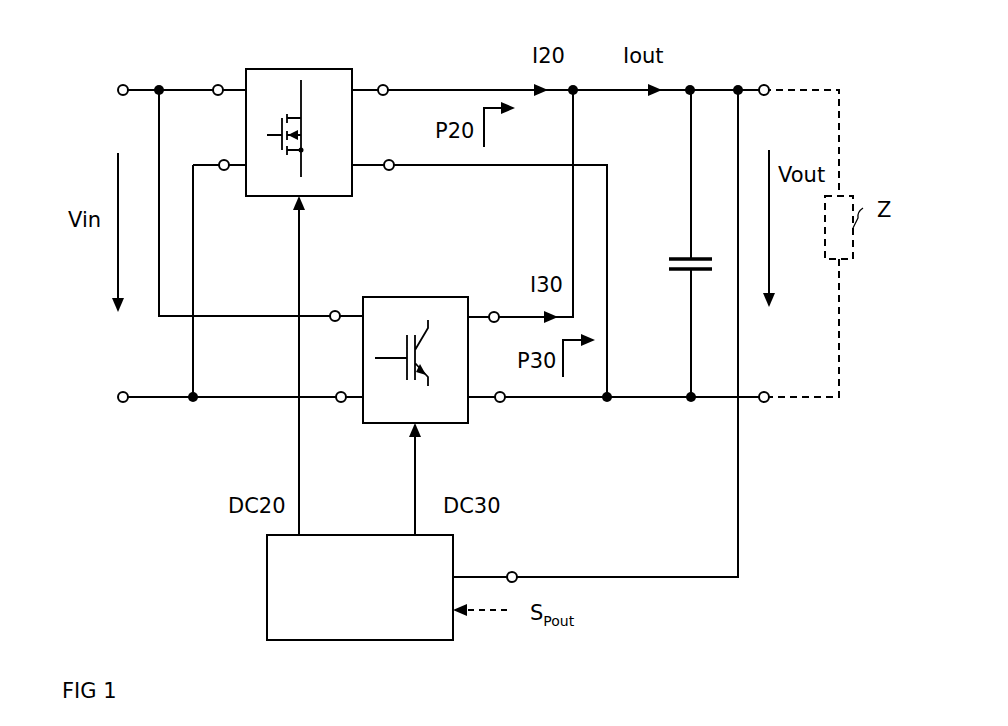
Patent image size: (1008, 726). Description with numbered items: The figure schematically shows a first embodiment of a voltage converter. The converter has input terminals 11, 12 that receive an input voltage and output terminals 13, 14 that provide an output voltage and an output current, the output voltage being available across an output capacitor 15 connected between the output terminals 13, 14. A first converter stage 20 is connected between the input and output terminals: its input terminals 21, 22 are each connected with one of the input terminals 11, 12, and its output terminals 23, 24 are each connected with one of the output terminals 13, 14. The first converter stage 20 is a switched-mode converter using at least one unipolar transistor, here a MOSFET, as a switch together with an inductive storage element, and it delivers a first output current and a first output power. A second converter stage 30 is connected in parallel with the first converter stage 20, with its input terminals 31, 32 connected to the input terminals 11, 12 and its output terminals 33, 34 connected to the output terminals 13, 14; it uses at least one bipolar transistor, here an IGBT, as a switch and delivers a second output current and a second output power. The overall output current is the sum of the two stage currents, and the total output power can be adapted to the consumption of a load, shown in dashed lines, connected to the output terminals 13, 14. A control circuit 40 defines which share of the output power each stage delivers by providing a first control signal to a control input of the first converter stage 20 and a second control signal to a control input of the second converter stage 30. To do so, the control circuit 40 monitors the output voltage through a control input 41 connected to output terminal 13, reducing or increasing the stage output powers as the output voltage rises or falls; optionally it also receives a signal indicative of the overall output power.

The input terminal 11 is at (123, 84).
The input terminal 12 is at (123, 391).
The output terminal 13 is at (764, 84).
The output terminal 14 is at (764, 391).
The output capacitor 15 is at (705, 256).
The first converter stage 20 is at (305, 68).
The input terminal of the first converter stage 21 is at (218, 84).
The input terminal of the first converter stage 22 is at (219, 165).
The output terminal of the first converter stage 23 is at (385, 84).
The output terminal of the first converter stage 24 is at (391, 158).
The second converter stage 30 is at (422, 296).
The input terminal of the second converter stage 31 is at (335, 310).
The input terminal of the second converter stage 32 is at (341, 381).
The output terminal of the second converter stage 33 is at (495, 311).
The output terminal of the second converter stage 34 is at (500, 381).
The control circuit 40 is at (359, 533).
The control input 41 is at (512, 567).